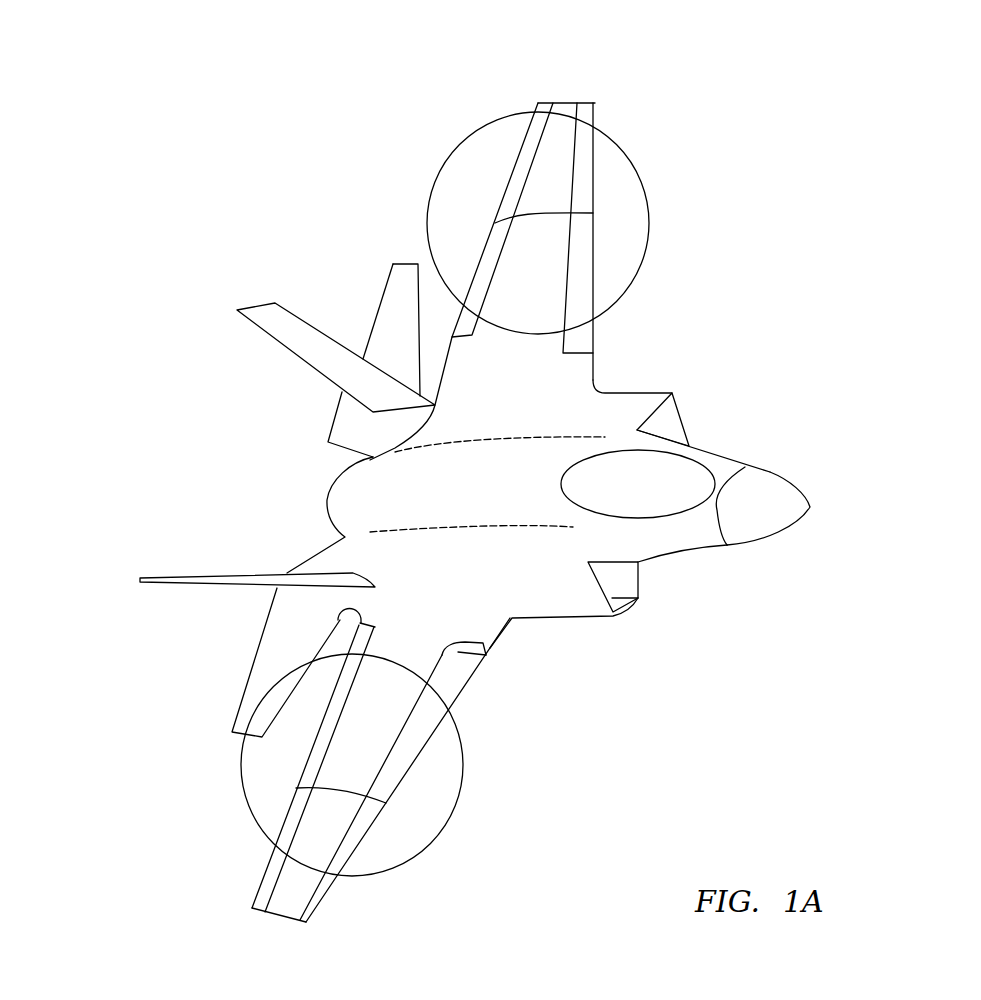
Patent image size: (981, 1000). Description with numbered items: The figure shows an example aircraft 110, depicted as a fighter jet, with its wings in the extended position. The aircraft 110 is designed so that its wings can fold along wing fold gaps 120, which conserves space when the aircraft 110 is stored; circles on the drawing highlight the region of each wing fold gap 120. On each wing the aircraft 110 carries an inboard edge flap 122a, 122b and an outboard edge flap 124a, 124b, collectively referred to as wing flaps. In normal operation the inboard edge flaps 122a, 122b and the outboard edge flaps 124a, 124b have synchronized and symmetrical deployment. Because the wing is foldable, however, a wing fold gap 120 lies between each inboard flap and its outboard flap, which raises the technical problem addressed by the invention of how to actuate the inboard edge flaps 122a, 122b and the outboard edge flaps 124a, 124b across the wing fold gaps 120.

The aircraft 110 is at (770, 472).
The wing fold gap 120 is at (648, 197).
The inboard edge flap 122a is at (450, 337).
The inboard edge flap 122b is at (357, 625).
The outboard edge flap 124a is at (517, 157).
The outboard edge flap 124b is at (265, 875).